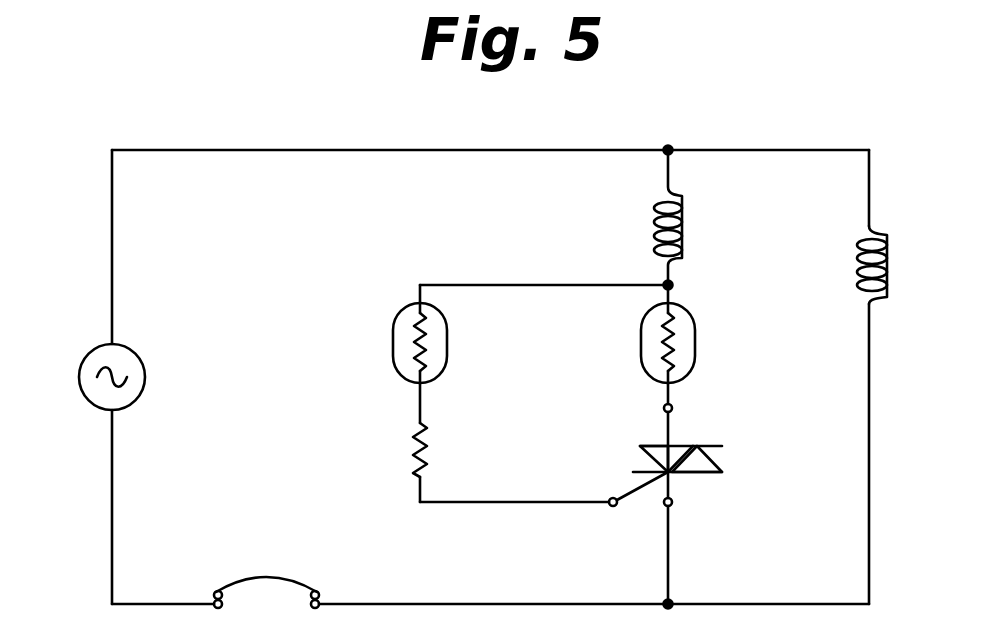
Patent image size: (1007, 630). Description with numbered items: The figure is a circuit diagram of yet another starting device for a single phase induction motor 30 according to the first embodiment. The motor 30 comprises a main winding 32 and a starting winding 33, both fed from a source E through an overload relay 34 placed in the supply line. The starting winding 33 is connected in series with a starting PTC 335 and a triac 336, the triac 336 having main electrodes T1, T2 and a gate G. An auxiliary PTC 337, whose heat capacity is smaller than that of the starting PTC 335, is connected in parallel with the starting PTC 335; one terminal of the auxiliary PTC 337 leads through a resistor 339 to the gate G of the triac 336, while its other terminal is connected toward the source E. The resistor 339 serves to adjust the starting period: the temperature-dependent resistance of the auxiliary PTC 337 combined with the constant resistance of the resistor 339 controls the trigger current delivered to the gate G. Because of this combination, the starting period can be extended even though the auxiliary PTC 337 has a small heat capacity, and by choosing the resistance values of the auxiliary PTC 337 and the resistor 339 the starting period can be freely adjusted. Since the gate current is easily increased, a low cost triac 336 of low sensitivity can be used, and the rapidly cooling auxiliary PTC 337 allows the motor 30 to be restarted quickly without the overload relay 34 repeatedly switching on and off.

The single phase induction motor 30 is at (766, 157).
The main winding 32 is at (857, 245).
The starting winding 33 is at (684, 235).
The overload relay 34 is at (243, 578).
The starting PTC 335 is at (698, 340).
The triac 336 is at (723, 446).
The auxiliary PTC 337 is at (393, 340).
The resistor 339 is at (417, 450).
The source E is at (91, 348).
The main electrode T1 is at (673, 502).
The main electrode T2 is at (664, 408).
The gate G is at (611, 497).